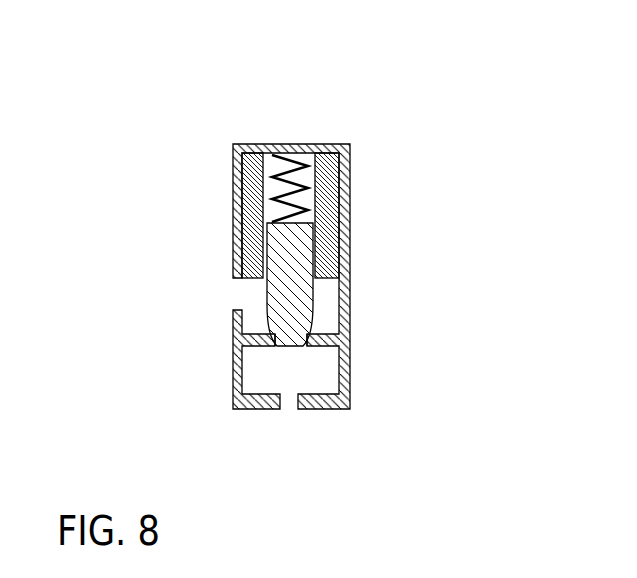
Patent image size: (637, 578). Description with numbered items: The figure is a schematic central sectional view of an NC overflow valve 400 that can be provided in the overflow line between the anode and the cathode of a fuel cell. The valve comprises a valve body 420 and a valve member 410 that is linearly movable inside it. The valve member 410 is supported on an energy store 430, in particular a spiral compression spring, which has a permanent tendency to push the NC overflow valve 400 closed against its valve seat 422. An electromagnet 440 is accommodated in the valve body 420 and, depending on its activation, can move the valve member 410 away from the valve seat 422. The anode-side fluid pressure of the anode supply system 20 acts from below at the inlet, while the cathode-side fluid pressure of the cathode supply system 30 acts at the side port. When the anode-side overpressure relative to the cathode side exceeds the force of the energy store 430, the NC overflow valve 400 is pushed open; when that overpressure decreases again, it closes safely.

The NC overflow valve 400 is at (296, 265).
The electromagnet 440 is at (250, 183).
The valve body 420 is at (343, 273).
The valve member 410 is at (244, 273).
The energy store 430 is at (300, 167).
The valve seat 422 is at (275, 345).
The cathode supply system 30 is at (225, 295).
The anode supply system 20 is at (290, 417).